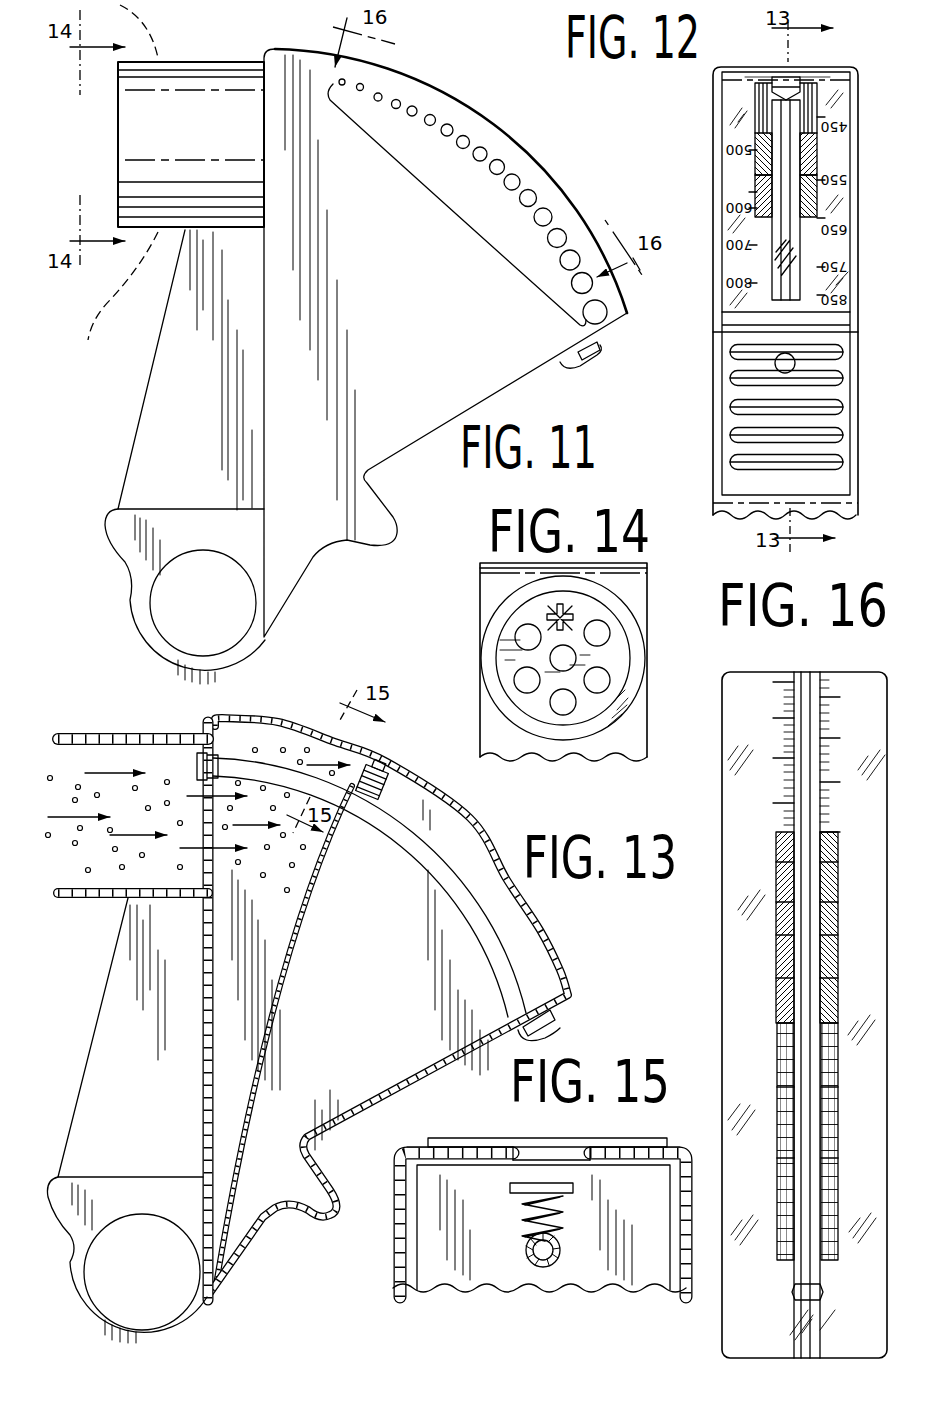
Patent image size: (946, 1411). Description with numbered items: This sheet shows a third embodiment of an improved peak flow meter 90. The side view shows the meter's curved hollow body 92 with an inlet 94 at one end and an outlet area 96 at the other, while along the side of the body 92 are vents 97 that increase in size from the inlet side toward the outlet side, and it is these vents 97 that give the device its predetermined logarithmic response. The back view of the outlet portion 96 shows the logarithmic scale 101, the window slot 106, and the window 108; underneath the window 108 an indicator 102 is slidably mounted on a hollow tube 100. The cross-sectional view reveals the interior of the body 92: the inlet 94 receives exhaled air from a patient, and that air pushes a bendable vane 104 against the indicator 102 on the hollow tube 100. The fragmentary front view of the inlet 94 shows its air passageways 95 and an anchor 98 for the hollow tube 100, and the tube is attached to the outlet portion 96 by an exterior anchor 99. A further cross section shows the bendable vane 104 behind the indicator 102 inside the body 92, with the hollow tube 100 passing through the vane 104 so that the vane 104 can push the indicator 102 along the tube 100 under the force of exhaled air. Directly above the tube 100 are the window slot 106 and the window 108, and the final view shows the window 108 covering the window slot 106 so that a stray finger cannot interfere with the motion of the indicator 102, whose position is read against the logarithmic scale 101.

In FIG. 11, the peak flow meter 90 is at (466, 81).
In FIG. 11, the curved hollow body 92 is at (475, 172).
In FIG. 15, the curved hollow body 92 is at (467, 1147).
In FIG. 11, the inlet 94 is at (118, 127).
In FIG. 14, the inlet 94 is at (485, 677).
In FIG. 13, the inlet 94 is at (60, 748).
In FIG. 14, the air passageways 95 is at (603, 633).
In FIG. 11, the outlet area 96 is at (562, 367).
In FIG. 12, the outlet area 96 is at (852, 408).
In FIG. 13, the outlet area 96 is at (545, 1038).
In FIG. 11, the vents 97 is at (447, 212).
In FIG. 11, the anchor 98 is at (600, 352).
In FIG. 14, the anchor 98 is at (562, 607).
In FIG. 13, the exterior anchor 99 is at (558, 1016).
In FIG. 12, the hollow tube 100 is at (788, 227).
In FIG. 13, the hollow tube 100 is at (450, 860).
In FIG. 15, the hollow tube 100 is at (560, 1258).
In FIG. 16, the hollow tube 100 is at (808, 685).
In FIG. 12, the logarithmic scale 101 is at (817, 172).
In FIG. 13, the logarithmic scale 101 is at (458, 811).
In FIG. 16, the logarithmic scale 101 is at (778, 803).
In FIG. 12, the indicator 102 is at (791, 95).
In FIG. 13, the indicator 102 is at (420, 790).
In FIG. 15, the indicator 102 is at (575, 1188).
In FIG. 16, the indicator 102 is at (795, 1289).
In FIG. 13, the bendable vane 104 is at (253, 1008).
In FIG. 15, the bendable vane 104 is at (433, 1257).
In FIG. 12, the window slot 106 is at (778, 78).
In FIG. 15, the window slot 106 is at (587, 1147).
In FIG. 16, the window slot 106 is at (797, 672).
In FIG. 15, the window 108 is at (537, 1138).
In FIG. 16, the window 108 is at (853, 672).